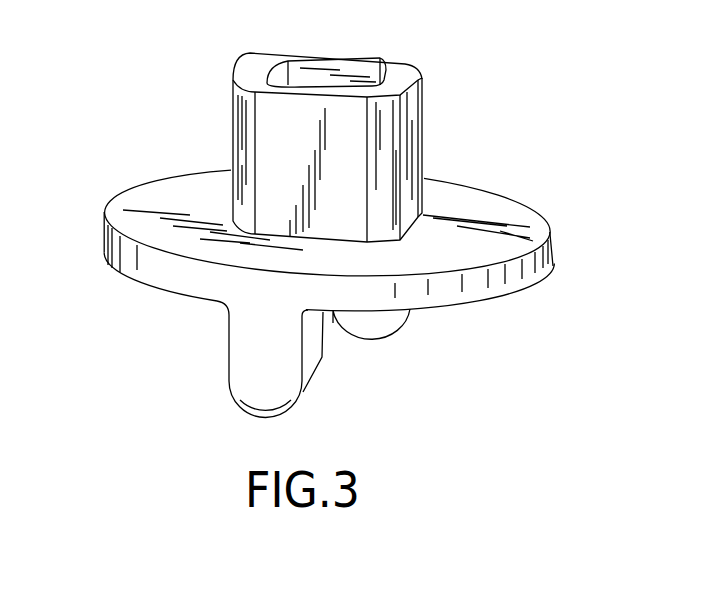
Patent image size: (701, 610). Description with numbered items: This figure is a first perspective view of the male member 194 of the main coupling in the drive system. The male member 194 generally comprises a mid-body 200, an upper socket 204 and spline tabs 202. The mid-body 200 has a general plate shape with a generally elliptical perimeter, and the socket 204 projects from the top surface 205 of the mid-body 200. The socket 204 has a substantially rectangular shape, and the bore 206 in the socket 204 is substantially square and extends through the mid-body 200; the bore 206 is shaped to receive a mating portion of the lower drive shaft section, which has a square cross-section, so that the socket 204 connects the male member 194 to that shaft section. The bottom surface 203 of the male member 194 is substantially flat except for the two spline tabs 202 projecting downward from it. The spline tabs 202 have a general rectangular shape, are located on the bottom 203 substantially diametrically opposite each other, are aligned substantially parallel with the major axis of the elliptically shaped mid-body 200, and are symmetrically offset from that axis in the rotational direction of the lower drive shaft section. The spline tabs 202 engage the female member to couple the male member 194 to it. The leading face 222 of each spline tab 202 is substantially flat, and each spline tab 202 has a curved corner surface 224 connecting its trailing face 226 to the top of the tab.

The male member 194 is at (193, 126).
The mid-body 200 is at (110, 260).
The spline tabs 202 is at (258, 418).
The bottom surface 203 is at (163, 288).
The upper socket 204 is at (412, 138).
The top surface 205 is at (508, 213).
The bore 206 is at (345, 72).
The leading face 222 is at (228, 343).
The curved corner surface 224 is at (280, 418).
The trailing face 226 is at (318, 352).